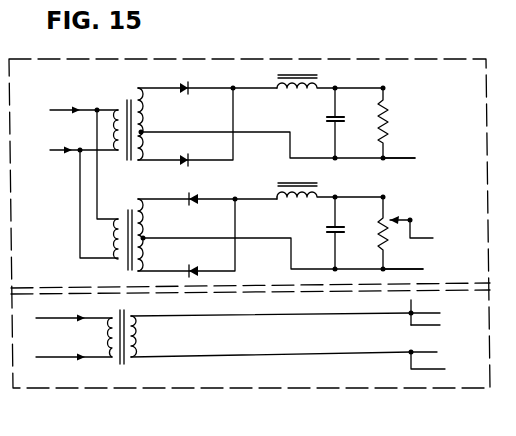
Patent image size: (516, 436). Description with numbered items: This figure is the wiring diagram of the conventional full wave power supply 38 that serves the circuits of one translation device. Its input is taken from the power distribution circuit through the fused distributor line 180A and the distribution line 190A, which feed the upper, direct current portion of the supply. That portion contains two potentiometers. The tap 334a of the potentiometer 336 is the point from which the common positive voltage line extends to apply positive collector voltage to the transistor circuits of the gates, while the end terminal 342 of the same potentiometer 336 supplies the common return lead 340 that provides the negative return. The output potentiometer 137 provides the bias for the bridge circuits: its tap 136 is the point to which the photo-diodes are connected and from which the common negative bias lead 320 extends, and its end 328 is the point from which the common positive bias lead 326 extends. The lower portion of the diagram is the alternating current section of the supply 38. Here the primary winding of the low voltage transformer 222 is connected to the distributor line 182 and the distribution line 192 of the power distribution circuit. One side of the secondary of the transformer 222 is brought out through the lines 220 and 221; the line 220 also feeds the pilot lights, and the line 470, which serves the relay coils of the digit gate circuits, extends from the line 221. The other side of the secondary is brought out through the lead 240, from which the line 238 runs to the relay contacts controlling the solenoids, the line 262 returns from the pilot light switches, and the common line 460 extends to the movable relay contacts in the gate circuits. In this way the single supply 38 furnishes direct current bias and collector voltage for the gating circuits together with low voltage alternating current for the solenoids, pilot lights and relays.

The power supply 38 is at (465, 32).
The distributor line 180A is at (65, 107).
The distribution line 190A is at (53, 148).
The tap of potentiometer 334a is at (388, 112).
The potentiometer 336 is at (375, 126).
The common return lead 340 is at (403, 145).
The end terminal 342 is at (383, 158).
The tap 136 is at (410, 216).
The common negative bias lead 320 is at (423, 238).
The output potentiometer 137 is at (382, 243).
The end of potentiometer 328 is at (393, 267).
The common positive bias lead 326 is at (413, 272).
The distributor line 182 is at (62, 316).
The distribution line 192 is at (60, 350).
The low voltage transformer 222 is at (124, 313).
The line 238 is at (417, 301).
The lead 240 is at (283, 315).
The line 221 is at (372, 347).
The common line 460 is at (430, 315).
The line 262 is at (430, 330).
The line 220 is at (437, 351).
The line 470 is at (442, 396).